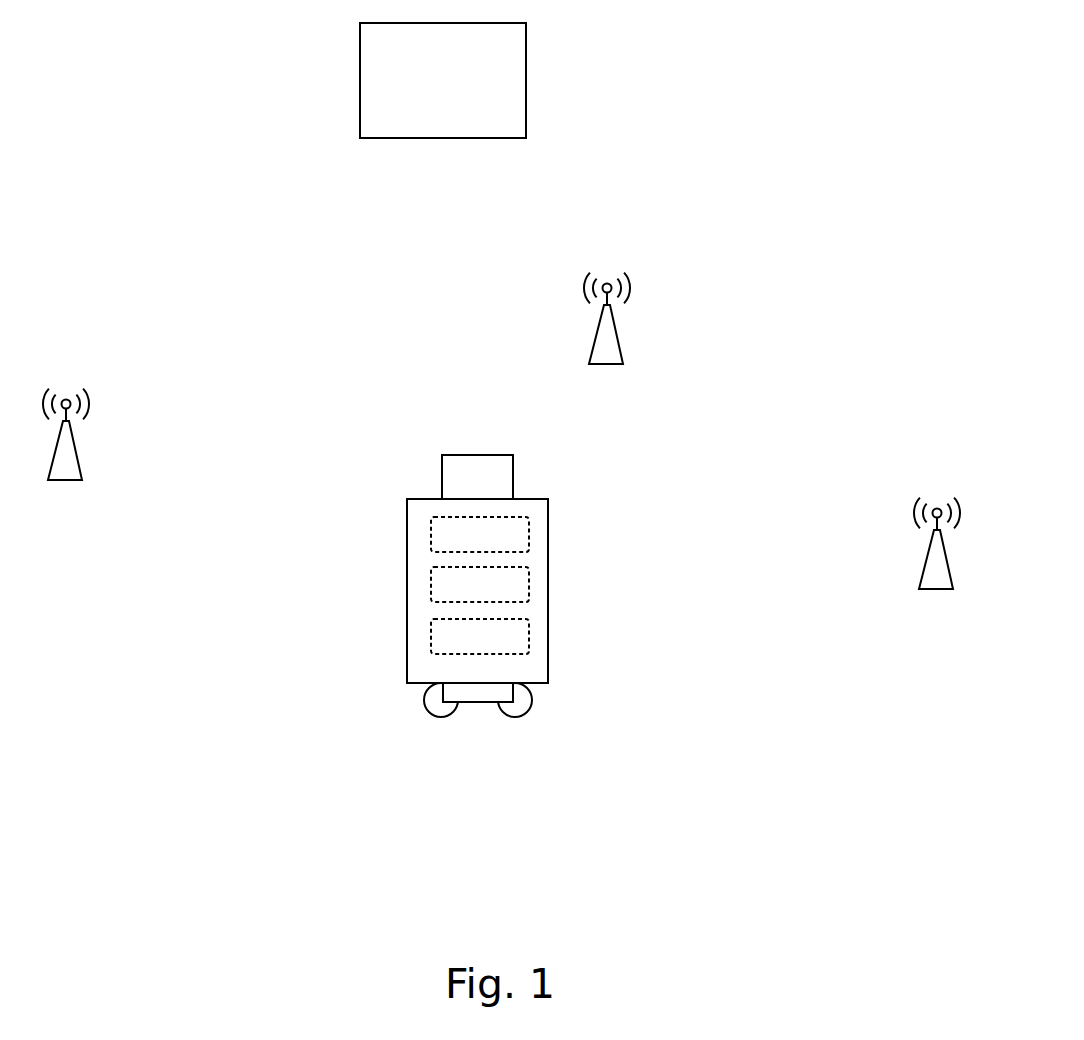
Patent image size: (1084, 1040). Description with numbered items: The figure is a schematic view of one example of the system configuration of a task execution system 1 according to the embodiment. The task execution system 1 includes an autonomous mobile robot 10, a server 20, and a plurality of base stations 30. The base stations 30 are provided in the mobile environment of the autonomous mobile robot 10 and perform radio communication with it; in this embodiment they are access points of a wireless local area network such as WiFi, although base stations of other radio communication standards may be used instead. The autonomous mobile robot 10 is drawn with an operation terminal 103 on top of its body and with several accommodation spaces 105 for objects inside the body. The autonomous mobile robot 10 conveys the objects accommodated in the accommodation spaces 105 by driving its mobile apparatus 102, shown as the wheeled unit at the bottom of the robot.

The task execution system 1 is at (495, 821).
The autonomous mobile robot 10 is at (460, 561).
The server 20 is at (526, 68).
The base station 30 is at (614, 341).
The mobile apparatus 102 is at (531, 700).
The operation terminal 103 is at (513, 471).
The accommodation space 105 is at (529, 535).